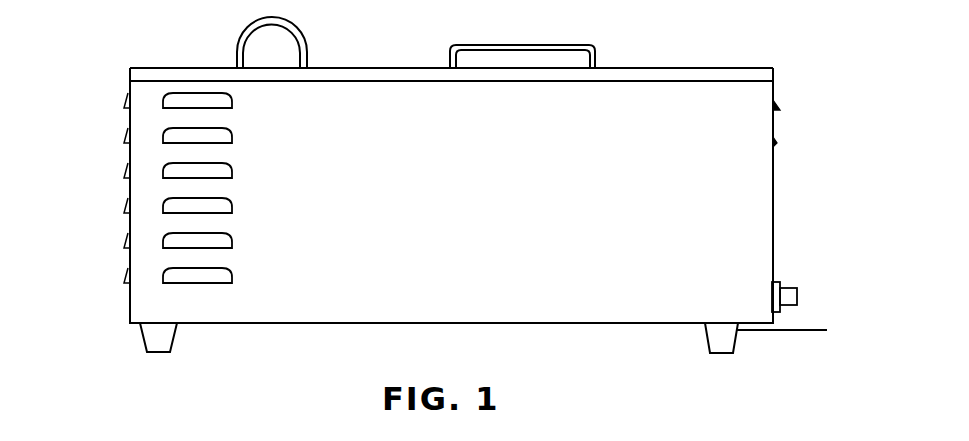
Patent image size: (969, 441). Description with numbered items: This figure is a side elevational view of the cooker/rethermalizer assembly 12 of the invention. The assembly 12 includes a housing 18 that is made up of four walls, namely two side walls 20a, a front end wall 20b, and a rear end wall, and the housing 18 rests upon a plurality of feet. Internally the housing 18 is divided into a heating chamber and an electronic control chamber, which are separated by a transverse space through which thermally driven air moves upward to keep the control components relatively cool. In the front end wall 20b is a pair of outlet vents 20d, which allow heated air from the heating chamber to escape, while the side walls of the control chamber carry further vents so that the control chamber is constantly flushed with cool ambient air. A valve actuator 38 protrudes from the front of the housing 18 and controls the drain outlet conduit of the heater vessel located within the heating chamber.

The assembly 12 is at (708, 61).
The housing 18 is at (752, 187).
The side walls 20a is at (128, 190).
The front end wall 20b is at (773, 237).
The outlet vents 20d is at (813, 118).
The valve actuator 38 is at (798, 300).